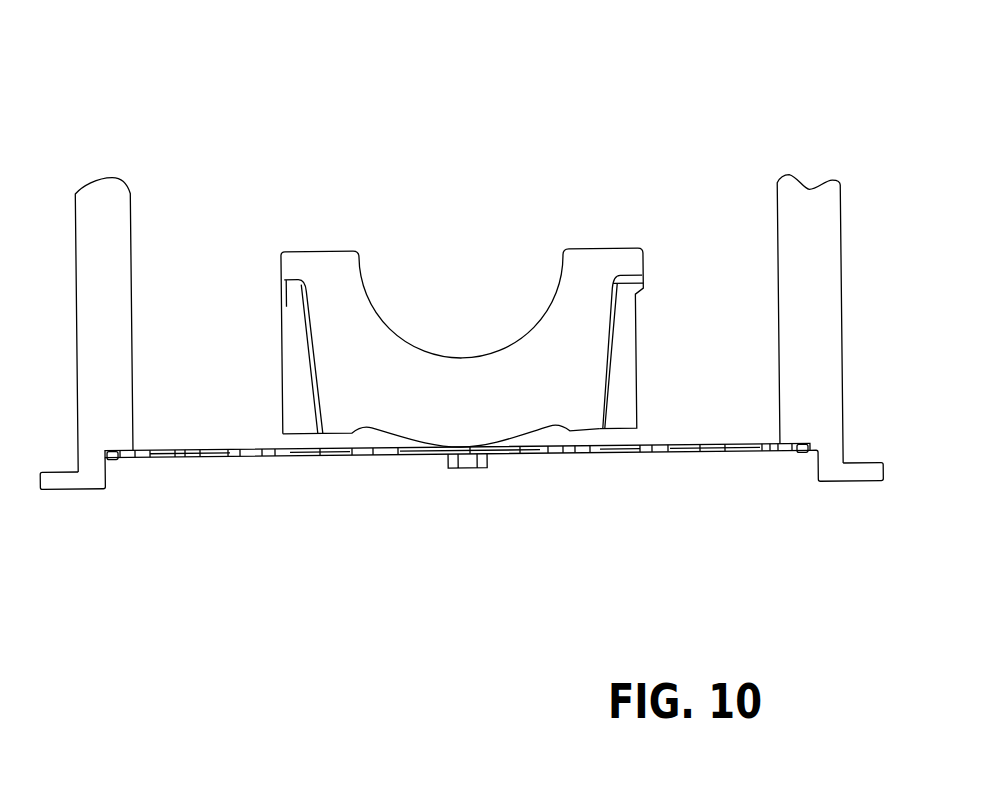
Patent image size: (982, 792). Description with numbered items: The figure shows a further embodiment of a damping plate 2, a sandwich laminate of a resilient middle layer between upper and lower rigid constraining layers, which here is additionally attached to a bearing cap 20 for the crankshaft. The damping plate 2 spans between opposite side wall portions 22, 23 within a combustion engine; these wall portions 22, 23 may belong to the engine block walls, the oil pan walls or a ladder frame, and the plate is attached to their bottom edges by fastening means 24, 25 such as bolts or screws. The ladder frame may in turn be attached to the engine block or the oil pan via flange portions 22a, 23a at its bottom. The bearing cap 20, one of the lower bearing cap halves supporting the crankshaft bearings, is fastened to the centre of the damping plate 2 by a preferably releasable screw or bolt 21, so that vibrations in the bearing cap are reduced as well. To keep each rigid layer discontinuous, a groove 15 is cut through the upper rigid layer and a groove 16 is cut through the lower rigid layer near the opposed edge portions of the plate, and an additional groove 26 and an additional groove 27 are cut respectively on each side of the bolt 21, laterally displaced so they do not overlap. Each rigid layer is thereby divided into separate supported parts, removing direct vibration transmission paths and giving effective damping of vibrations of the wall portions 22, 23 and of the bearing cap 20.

The damping plate 2 is at (190, 423).
The groove 15 is at (693, 425).
The groove 16 is at (239, 479).
The bearing cap 20 is at (582, 282).
The screw or bolt 21 is at (468, 468).
The side wall portion 22 is at (97, 233).
The flange portion 22a is at (55, 483).
The side wall portion 23 is at (795, 222).
The flange portion 23a is at (862, 468).
The fastening means 24 is at (122, 462).
The fastening means 25 is at (785, 455).
The additional groove 26 is at (373, 469).
The additional groove 27 is at (554, 472).